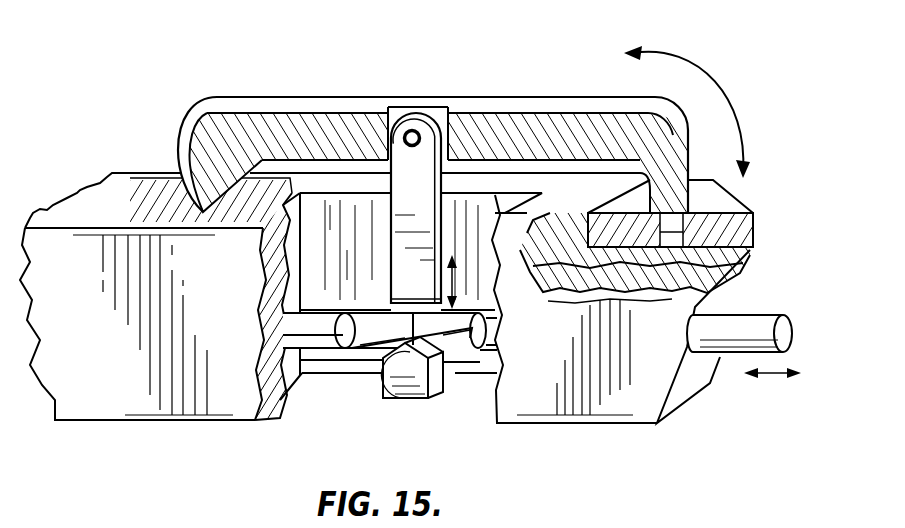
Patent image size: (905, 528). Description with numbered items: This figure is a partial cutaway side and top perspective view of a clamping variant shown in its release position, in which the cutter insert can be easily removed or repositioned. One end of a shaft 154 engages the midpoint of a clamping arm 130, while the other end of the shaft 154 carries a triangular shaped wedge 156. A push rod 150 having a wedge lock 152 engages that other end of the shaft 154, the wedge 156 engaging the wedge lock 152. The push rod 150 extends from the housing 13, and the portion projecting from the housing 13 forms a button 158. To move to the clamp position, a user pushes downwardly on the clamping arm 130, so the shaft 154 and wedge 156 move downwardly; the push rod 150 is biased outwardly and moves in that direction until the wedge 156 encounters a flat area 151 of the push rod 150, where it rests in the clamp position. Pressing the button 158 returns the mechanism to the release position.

The housing 13 is at (97, 375).
The clamping arm 130 is at (493, 100).
The push rod 150 is at (314, 333).
The flat area 151 is at (357, 350).
The wedge lock 152 is at (440, 335).
The shaft 154 is at (404, 116).
The wedge 156 is at (400, 402).
The button 158 is at (752, 313).